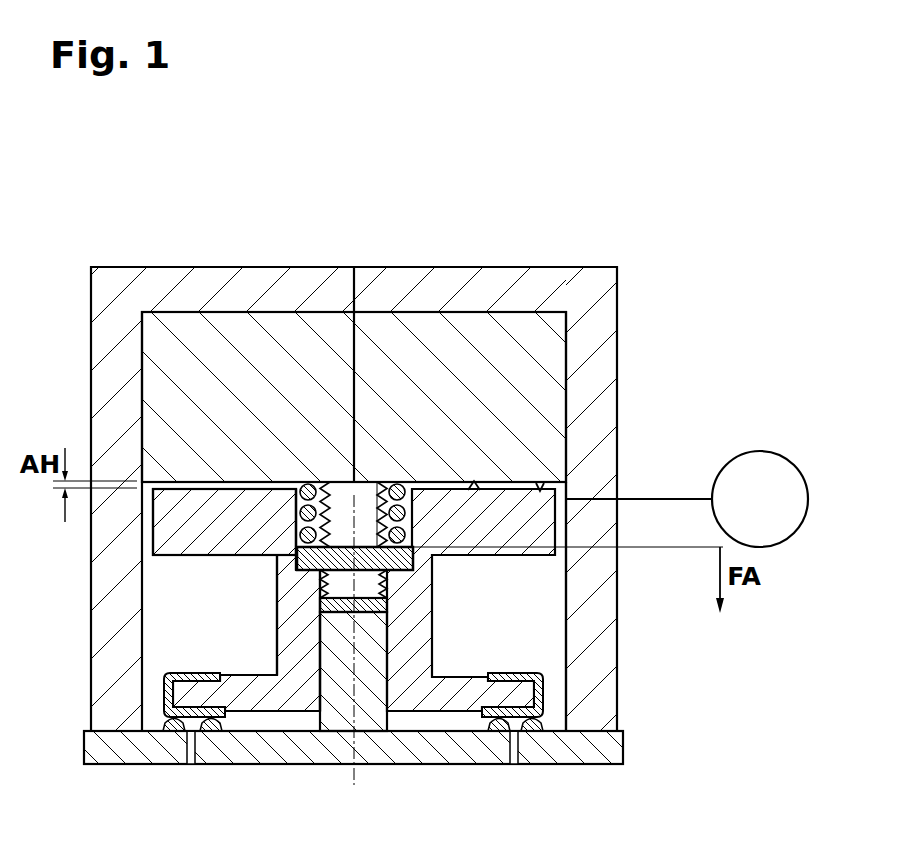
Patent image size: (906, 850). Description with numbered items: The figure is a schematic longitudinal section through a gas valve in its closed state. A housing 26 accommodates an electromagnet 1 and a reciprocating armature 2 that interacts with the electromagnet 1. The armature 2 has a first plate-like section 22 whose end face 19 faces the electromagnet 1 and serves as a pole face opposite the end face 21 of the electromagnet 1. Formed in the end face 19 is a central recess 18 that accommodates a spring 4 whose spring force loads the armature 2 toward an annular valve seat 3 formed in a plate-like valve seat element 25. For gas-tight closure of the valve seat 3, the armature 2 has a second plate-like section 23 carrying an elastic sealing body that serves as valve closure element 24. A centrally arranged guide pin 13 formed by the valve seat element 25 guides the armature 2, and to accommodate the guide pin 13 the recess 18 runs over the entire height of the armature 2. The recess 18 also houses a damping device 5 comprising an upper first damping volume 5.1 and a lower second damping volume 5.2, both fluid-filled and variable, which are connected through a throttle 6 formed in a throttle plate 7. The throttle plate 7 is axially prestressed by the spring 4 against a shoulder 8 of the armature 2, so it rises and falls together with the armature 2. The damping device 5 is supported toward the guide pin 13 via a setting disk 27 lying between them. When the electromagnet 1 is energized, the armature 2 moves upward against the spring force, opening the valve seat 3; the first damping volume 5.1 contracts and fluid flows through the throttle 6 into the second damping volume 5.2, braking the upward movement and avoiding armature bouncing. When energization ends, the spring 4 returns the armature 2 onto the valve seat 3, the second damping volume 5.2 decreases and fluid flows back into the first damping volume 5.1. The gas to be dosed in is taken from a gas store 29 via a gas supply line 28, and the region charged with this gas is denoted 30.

The electromagnet 1 is at (240, 335).
The armature 2 is at (232, 522).
The valve seat 3 is at (538, 716).
The spring 4 is at (307, 477).
The damping device 5 is at (333, 481).
The first damping volume 5.1 is at (363, 500).
The second damping volume 5.2 is at (353, 590).
The throttle 6 is at (353, 556).
The throttle plate 7 is at (300, 553).
The shoulder 8 is at (413, 553).
The guide pin 13 is at (343, 680).
The central recess 18 is at (393, 493).
The end face 19 is at (540, 490).
The end face of the electromagnet 21 is at (492, 493).
The first plate-like section 22 is at (183, 533).
The second plate-like section 23 is at (241, 693).
The valve closure element 24 is at (165, 693).
The valve seat element 25 is at (281, 743).
The housing 26 is at (196, 285).
The setting disk 27 is at (345, 582).
The gas supply line 28 is at (687, 499).
The gas store 29 is at (758, 465).
The region charged with gas 30 is at (537, 647).